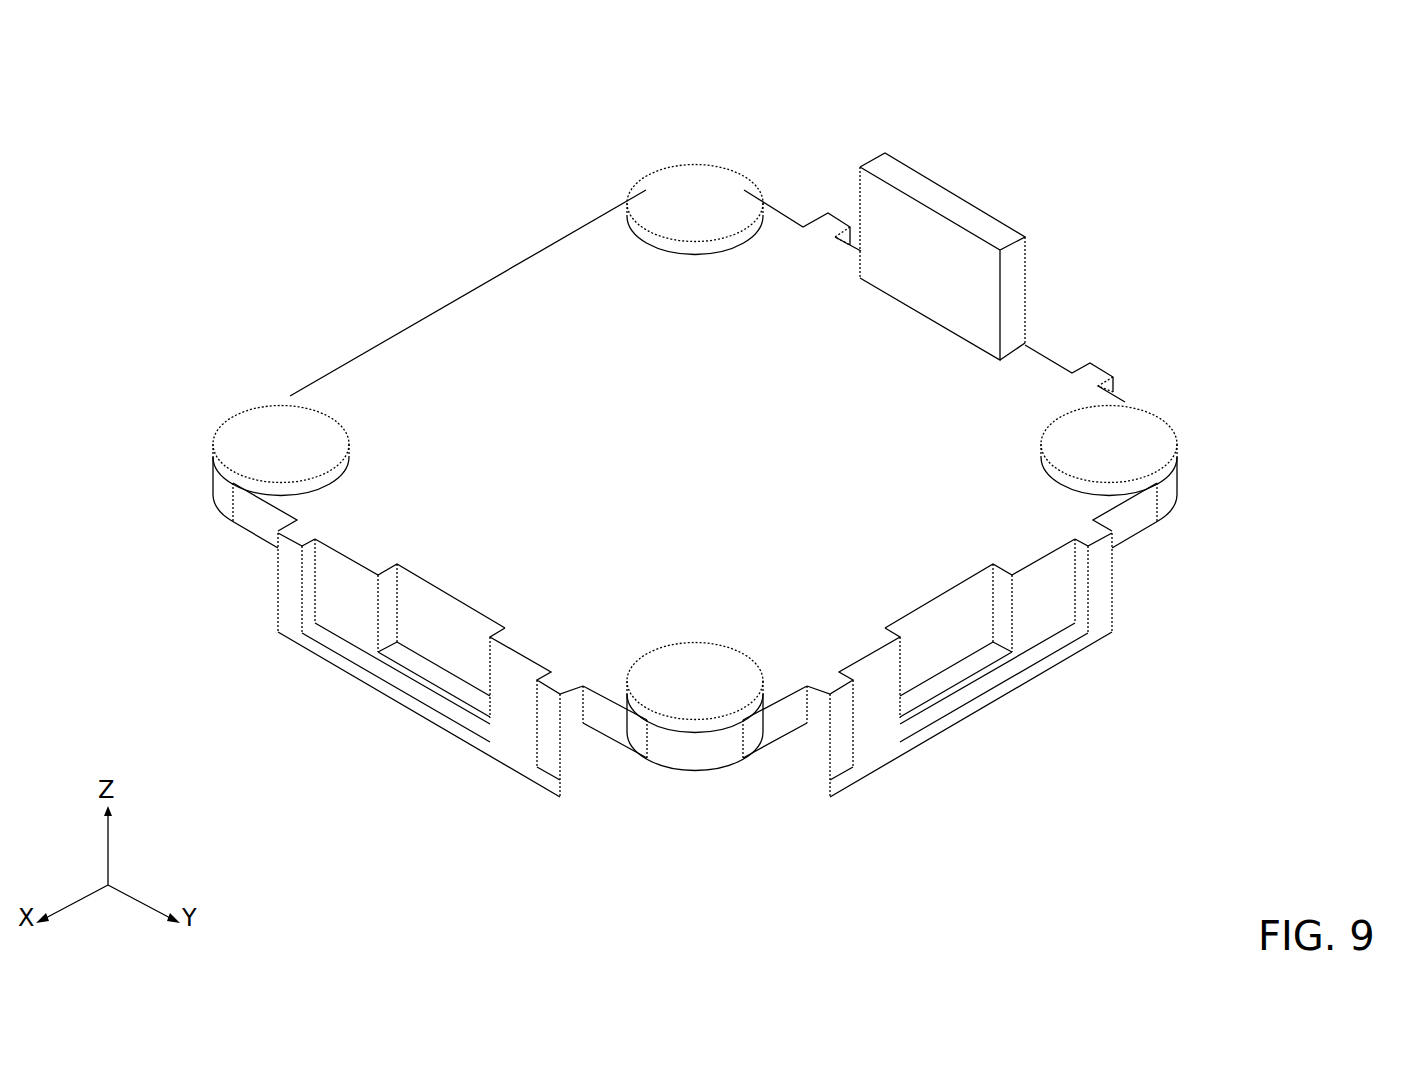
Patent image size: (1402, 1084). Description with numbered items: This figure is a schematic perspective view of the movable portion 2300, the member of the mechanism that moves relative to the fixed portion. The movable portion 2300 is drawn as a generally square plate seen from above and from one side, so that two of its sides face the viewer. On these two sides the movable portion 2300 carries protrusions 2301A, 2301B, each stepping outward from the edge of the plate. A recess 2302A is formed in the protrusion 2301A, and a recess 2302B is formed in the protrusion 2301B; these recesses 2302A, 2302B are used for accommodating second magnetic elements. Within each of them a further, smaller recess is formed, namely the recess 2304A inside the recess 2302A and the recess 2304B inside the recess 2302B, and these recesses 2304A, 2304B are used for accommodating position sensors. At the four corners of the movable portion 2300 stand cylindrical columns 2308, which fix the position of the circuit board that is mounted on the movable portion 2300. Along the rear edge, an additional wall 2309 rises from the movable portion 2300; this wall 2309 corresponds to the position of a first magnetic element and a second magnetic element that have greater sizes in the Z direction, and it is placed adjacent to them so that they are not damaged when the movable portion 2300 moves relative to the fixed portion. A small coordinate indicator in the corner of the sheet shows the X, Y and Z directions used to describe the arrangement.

The movable portion 2300 is at (312, 84).
The columns 2308 is at (690, 200).
The wall 2309 is at (960, 205).
The protrusion 2301A is at (285, 597).
The recess 2302A is at (520, 705).
The recess 2304A is at (440, 645).
The protrusion 2301B is at (845, 735).
The recess 2302B is at (1040, 610).
The recess 2304B is at (945, 635).